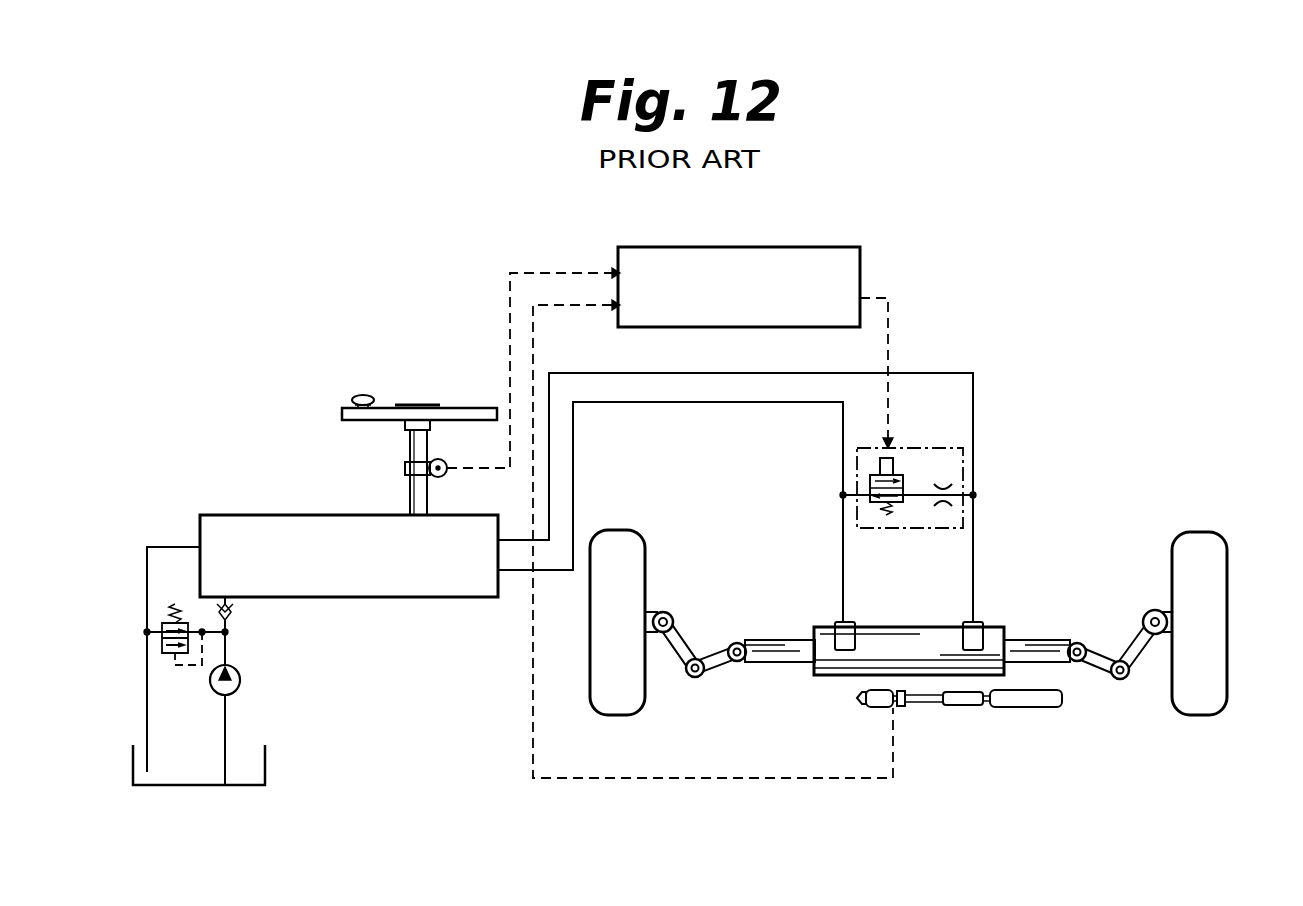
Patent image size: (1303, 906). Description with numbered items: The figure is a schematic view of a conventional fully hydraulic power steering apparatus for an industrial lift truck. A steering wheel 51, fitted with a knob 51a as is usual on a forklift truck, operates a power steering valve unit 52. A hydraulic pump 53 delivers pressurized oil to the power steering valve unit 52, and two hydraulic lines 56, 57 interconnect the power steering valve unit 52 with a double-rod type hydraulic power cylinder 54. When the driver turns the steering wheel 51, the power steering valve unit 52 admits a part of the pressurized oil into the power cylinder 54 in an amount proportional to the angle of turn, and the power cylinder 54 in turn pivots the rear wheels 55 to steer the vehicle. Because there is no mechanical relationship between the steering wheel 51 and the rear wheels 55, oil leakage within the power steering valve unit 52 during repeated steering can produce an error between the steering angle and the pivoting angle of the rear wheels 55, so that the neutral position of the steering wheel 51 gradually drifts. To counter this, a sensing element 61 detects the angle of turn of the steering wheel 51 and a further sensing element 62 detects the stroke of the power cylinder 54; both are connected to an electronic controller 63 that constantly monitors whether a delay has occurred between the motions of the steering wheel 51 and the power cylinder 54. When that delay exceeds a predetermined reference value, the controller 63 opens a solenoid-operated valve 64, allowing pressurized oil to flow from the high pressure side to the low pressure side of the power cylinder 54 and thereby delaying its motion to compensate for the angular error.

The steering wheel 51 is at (342, 413).
The knob 51a is at (357, 395).
The power steering valve unit 52 is at (450, 597).
The hydraulic pump 53 is at (240, 680).
The double-rod type hydraulic power cylinder 54 is at (826, 676).
The rear wheels 55 is at (612, 716).
The hydraulic line 56 is at (843, 598).
The hydraulic line 57 is at (973, 577).
The sensing element 61 is at (405, 468).
The sensing element 62 is at (955, 708).
The electronic controller 63 is at (768, 247).
The solenoid-operated valve 64 is at (917, 447).